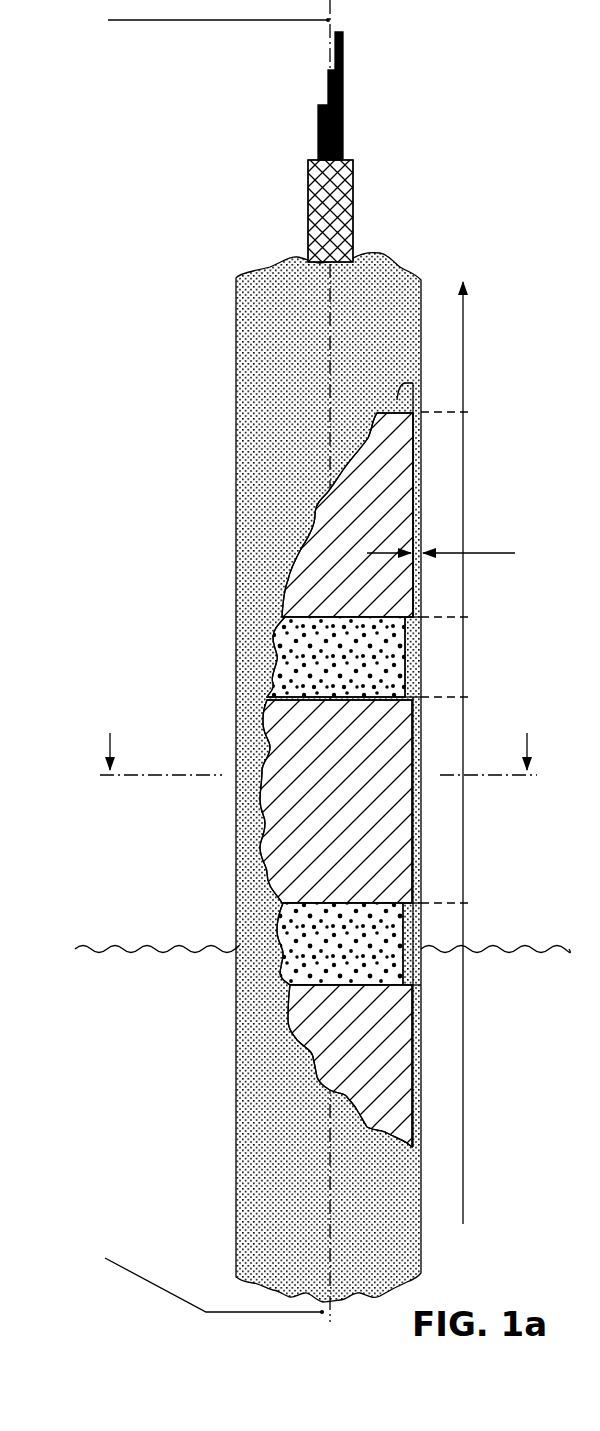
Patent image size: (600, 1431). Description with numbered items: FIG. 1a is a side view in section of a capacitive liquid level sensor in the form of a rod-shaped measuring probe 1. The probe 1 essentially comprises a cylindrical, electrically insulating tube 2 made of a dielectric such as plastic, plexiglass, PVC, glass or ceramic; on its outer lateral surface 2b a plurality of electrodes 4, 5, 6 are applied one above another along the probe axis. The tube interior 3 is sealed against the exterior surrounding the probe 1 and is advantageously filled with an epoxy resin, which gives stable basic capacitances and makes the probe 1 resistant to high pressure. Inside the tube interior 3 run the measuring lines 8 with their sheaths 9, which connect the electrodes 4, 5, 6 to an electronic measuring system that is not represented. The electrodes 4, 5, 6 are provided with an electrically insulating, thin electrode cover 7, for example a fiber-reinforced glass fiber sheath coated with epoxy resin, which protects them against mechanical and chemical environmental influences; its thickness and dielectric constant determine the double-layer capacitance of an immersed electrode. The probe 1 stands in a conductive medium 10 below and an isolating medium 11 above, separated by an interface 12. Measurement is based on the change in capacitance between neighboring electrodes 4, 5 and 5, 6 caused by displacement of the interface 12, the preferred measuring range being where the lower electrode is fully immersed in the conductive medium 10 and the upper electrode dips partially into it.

The measuring probe 1 is at (407, 225).
The tube 2 is at (317, 657).
The outer lateral surface 2b is at (405, 655).
The tube interior 3 is at (272, 259).
The electrode 4 is at (360, 515).
The electrode 5 is at (308, 823).
The electrode 6 is at (358, 1059).
The electrode cover 7 is at (283, 1170).
The measuring lines 8 is at (323, 90).
The sheaths 9 is at (327, 205).
The conductive medium 10 is at (184, 1000).
The isolating medium 11 is at (184, 926).
The interface 12 is at (126, 949).